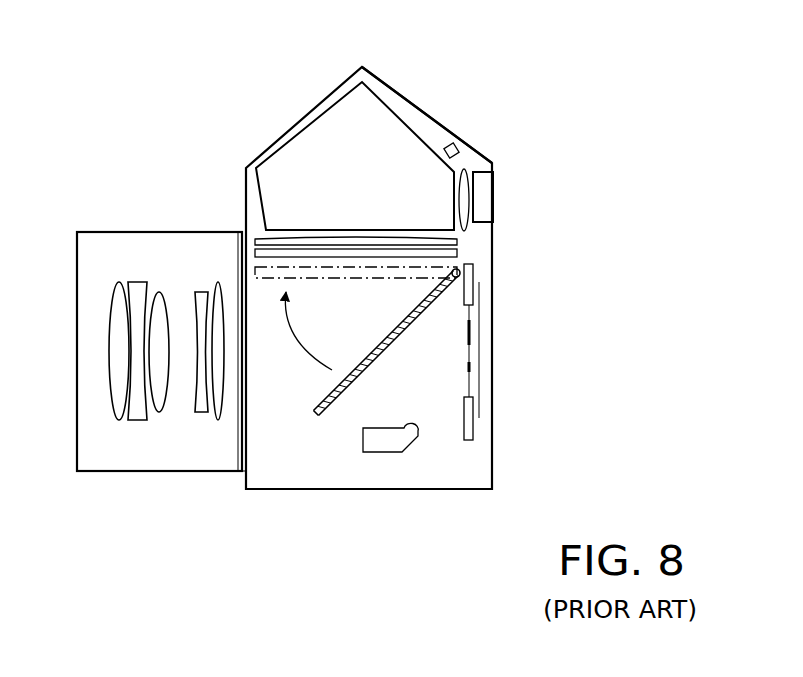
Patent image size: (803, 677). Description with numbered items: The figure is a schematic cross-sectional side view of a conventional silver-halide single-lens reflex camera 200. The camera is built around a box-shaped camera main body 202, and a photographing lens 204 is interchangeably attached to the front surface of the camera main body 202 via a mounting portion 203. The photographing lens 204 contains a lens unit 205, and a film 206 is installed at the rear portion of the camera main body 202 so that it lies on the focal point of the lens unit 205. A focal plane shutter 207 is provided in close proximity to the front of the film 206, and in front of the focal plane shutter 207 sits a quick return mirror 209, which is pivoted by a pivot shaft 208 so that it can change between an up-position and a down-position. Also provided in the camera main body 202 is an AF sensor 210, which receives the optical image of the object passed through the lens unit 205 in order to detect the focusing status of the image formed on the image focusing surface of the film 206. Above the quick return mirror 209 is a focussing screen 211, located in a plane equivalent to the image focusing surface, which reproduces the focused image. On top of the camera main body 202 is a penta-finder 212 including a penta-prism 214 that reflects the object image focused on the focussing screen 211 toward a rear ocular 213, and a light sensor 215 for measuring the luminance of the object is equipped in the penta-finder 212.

The single-lens reflex camera 200 is at (228, 154).
The camera main body 202 is at (496, 238).
The mounting portion 203 is at (243, 452).
The photographing lens 204 is at (106, 227).
The lens unit 205 is at (140, 422).
The film 206 is at (479, 343).
The focal plane shutter 207 is at (469, 384).
The pivot shaft 208 is at (470, 272).
The quick return mirror 209 is at (420, 362).
The AF sensor 210 is at (388, 444).
The focussing screen 211 is at (267, 250).
The penta-finder 212 is at (383, 77).
The rear ocular 213 is at (462, 200).
The penta-prism 214 is at (397, 128).
The light sensor 215 is at (460, 144).